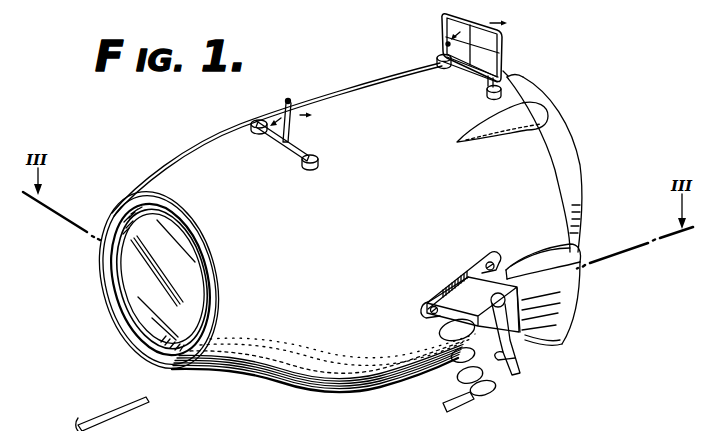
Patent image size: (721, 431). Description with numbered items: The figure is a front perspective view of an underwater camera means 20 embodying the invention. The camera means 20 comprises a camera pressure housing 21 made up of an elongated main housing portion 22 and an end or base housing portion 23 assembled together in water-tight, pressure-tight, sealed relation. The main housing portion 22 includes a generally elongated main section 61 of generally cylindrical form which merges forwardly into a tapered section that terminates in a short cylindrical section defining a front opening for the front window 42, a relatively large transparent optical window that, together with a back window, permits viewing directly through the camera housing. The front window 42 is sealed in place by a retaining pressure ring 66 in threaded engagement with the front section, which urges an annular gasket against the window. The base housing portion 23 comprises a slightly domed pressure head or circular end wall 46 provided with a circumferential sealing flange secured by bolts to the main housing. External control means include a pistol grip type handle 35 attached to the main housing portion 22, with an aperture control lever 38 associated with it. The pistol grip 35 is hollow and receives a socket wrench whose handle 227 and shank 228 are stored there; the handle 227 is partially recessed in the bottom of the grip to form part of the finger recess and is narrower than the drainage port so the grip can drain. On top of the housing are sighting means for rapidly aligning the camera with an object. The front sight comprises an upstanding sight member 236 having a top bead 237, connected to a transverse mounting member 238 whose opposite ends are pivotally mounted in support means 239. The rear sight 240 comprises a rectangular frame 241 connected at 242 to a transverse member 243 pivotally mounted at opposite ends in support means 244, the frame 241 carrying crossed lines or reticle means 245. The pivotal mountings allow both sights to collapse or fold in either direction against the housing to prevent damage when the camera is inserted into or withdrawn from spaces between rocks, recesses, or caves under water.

The underwater camera means 20 is at (318, 90).
The camera pressure housing 21 is at (272, 374).
The main housing portion 22 is at (337, 227).
The base housing portion 23 is at (568, 208).
The handle 35 is at (520, 380).
The aperture control lever 38 is at (508, 347).
The front window 42 is at (137, 273).
The circular end wall 46 is at (565, 144).
The main section 61 is at (157, 173).
The retaining pressure ring 66 is at (137, 325).
The handle 227 is at (473, 413).
The shank 228 is at (128, 424).
The sight member 236 is at (322, 132).
The top bead 237 is at (288, 100).
The transverse mounting member 238 is at (281, 143).
The support means 239 is at (258, 122).
The rear sight 240 is at (506, 50).
The rectangular frame 241 is at (506, 62).
The connection 242 is at (447, 44).
The transverse member 243 is at (440, 70).
The support means 244 is at (490, 96).
The reticle means 245 is at (498, 39).